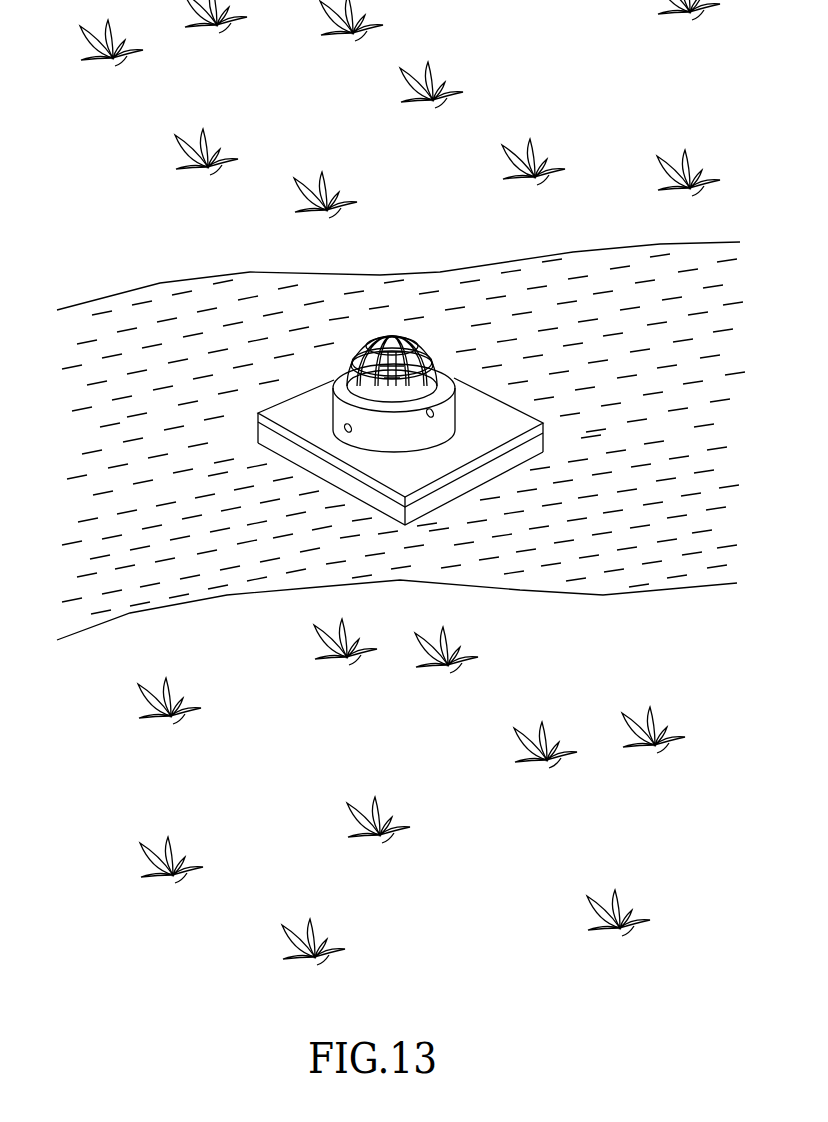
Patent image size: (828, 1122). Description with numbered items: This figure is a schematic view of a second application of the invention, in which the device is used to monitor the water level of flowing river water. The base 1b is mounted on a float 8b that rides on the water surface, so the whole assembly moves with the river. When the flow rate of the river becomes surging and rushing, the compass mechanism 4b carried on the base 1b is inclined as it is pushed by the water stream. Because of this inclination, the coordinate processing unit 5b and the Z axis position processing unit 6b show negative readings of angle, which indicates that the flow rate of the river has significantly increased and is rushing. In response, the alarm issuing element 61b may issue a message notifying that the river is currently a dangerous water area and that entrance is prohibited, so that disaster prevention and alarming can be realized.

The base 1b is at (440, 377).
The compass mechanism 4b is at (418, 347).
The coordinate processing unit 5b is at (427, 412).
The Z axis position processing unit 6b is at (347, 397).
The alarm issuing element 61b is at (318, 514).
The float 8b is at (303, 405).